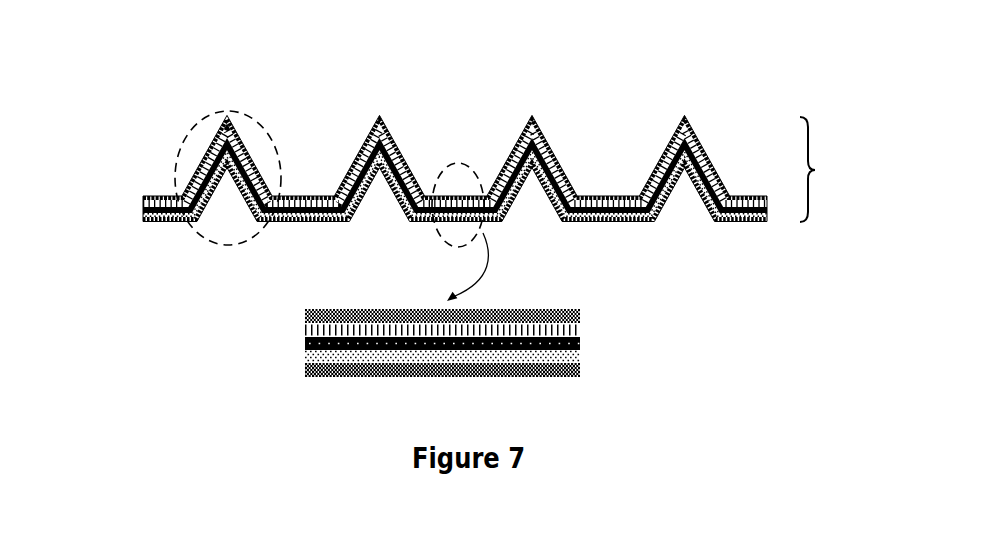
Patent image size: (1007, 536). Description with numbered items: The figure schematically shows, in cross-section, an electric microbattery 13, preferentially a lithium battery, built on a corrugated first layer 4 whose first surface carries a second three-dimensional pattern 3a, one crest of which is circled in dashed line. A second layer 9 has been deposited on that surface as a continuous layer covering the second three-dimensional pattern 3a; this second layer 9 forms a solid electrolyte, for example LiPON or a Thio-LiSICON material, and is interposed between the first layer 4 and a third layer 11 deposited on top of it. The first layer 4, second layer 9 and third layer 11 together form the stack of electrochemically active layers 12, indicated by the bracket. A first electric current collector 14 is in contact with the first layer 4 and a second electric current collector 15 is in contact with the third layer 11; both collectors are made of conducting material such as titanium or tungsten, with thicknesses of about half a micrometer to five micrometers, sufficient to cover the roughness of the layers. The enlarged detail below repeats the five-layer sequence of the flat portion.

The electric microbattery 13 is at (359, 62).
The second 3D pattern 3a is at (183, 145).
The second electric current collector 15 is at (703, 142).
The third layer 11 is at (528, 127).
The second layer 9 is at (556, 162).
The first layer 4 is at (712, 202).
The first electric current collector 14 is at (165, 220).
The stack of electrochemically active layers 12 is at (825, 169).